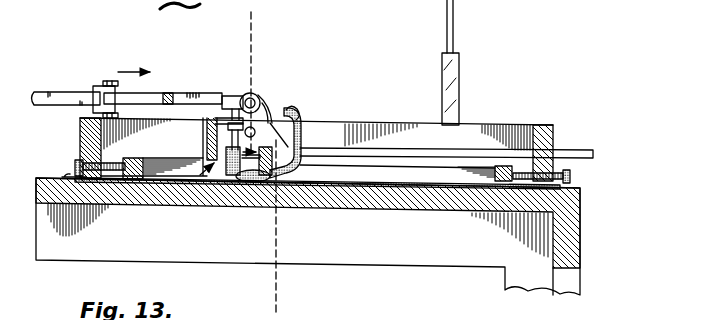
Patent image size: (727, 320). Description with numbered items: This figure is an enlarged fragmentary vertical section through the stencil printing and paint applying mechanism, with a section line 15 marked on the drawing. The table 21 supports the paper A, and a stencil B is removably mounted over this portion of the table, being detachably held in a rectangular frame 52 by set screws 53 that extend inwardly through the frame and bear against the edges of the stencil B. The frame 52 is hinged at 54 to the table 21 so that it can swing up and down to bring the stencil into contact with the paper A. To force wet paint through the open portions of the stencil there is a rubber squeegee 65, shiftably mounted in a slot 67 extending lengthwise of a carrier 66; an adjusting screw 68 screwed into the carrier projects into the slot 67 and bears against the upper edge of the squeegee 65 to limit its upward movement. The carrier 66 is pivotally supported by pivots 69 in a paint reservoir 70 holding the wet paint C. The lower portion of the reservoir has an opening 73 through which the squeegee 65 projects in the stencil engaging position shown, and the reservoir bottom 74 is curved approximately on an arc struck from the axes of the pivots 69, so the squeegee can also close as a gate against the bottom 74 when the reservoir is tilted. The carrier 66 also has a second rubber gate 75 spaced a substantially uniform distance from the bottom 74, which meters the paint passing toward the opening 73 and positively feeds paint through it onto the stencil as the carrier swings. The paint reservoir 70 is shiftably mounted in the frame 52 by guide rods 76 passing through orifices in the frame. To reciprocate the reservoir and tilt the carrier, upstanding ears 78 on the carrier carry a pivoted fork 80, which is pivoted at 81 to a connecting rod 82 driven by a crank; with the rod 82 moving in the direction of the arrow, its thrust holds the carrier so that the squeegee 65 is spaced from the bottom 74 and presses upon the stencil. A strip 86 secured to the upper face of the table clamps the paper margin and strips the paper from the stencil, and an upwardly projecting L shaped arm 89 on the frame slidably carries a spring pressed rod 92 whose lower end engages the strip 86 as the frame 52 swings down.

The section line 15- 15 is at (233, 58).
The table 21 is at (201, 198).
The frame 52 is at (554, 128).
The set screws 53 is at (570, 177).
The hinges 54 is at (64, 176).
The squeegee 65 is at (228, 178).
The carrier 66 is at (264, 130).
The slot 67 is at (219, 98).
The adjusting screw 68 is at (257, 97).
The pivots 69 is at (241, 136).
The paint reservoir 70 is at (301, 125).
The opening 73 is at (190, 195).
The reservoir bottom 74 is at (269, 187).
The second gate 75 is at (302, 147).
The guide rods 76 is at (465, 147).
The upstanding ears 78 is at (267, 128).
The fork 80 is at (168, 96).
The pivot 81 is at (110, 81).
The connecting rod 82 is at (72, 96).
The strip 86 is at (458, 192).
The L shaped arm 89 is at (455, 82).
The rod 92 is at (453, 17).
The paper A is at (396, 192).
The stencil B is at (506, 165).
The wet paint C is at (291, 197).